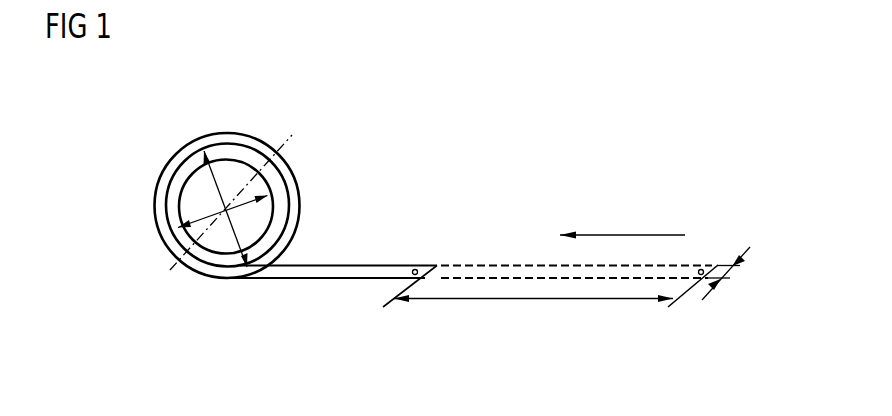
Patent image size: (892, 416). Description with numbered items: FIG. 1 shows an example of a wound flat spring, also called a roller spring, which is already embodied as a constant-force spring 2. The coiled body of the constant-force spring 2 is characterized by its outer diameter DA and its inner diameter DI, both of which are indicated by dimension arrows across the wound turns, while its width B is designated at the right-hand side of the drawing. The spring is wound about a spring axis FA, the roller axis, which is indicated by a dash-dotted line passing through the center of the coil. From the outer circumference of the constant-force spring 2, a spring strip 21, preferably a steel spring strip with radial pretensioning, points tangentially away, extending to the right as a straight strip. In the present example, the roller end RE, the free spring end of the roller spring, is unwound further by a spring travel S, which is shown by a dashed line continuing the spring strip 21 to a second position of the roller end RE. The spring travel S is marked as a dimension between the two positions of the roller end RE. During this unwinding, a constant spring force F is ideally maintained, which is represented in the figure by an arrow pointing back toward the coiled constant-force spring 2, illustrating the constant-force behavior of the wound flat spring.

The wound flat spring 2 is at (248, 137).
The spring strip 21 is at (377, 265).
The roller end RE is at (430, 265).
The outer diameter DA is at (215, 196).
The inner diameter DI is at (255, 212).
The spring axis FA is at (217, 218).
The spring force F is at (633, 237).
The spring travel S is at (533, 316).
The strip width B is at (731, 273).